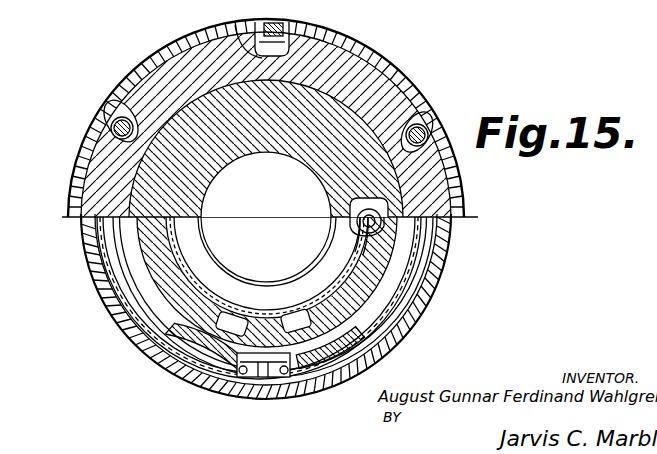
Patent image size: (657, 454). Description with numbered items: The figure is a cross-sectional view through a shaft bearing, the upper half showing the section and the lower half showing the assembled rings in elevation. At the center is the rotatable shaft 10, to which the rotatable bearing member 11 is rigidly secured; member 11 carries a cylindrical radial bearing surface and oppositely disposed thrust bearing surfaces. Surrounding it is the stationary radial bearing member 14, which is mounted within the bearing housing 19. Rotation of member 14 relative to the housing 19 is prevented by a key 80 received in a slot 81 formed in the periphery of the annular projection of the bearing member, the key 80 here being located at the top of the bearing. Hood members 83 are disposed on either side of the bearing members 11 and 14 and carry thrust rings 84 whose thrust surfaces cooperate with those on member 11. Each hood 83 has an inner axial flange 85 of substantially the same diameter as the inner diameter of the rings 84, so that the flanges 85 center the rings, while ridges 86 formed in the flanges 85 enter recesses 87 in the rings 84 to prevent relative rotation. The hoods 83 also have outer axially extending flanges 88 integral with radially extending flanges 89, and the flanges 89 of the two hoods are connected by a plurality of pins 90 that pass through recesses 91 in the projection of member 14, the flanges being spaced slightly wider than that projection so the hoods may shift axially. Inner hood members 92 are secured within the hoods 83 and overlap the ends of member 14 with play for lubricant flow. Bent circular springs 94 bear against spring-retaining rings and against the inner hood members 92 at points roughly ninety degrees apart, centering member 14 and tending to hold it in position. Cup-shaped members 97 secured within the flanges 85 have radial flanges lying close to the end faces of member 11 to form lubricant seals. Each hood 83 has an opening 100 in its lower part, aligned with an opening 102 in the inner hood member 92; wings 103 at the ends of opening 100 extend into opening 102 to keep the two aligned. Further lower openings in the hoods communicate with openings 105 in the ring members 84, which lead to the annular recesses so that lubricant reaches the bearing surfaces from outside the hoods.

The rotatable shaft 10 is at (218, 254).
The rotatable bearing member 11 is at (385, 183).
The stationary radial bearing member 14 is at (377, 90).
The bearing housing 19 is at (385, 64).
The key 80 is at (285, 16).
The slot 81 is at (246, 33).
The hood member 83 is at (378, 333).
The thrust ring 84 is at (166, 254).
The inner axial flange 85 is at (357, 268).
The ridge 86 is at (366, 222).
The recess 87 is at (368, 236).
The outer axial extending flange 88 is at (128, 335).
The radially extending flange 89 is at (115, 121).
The pin 90 is at (112, 124).
The recess 91 is at (133, 101).
The inner hood member 92 is at (411, 272).
The circular spring 94 is at (185, 357).
The cup-shaped member 97 is at (241, 275).
The opening 100 is at (258, 377).
The opening 102 is at (263, 377).
The wing 103 is at (243, 374).
The opening 105 is at (297, 322).